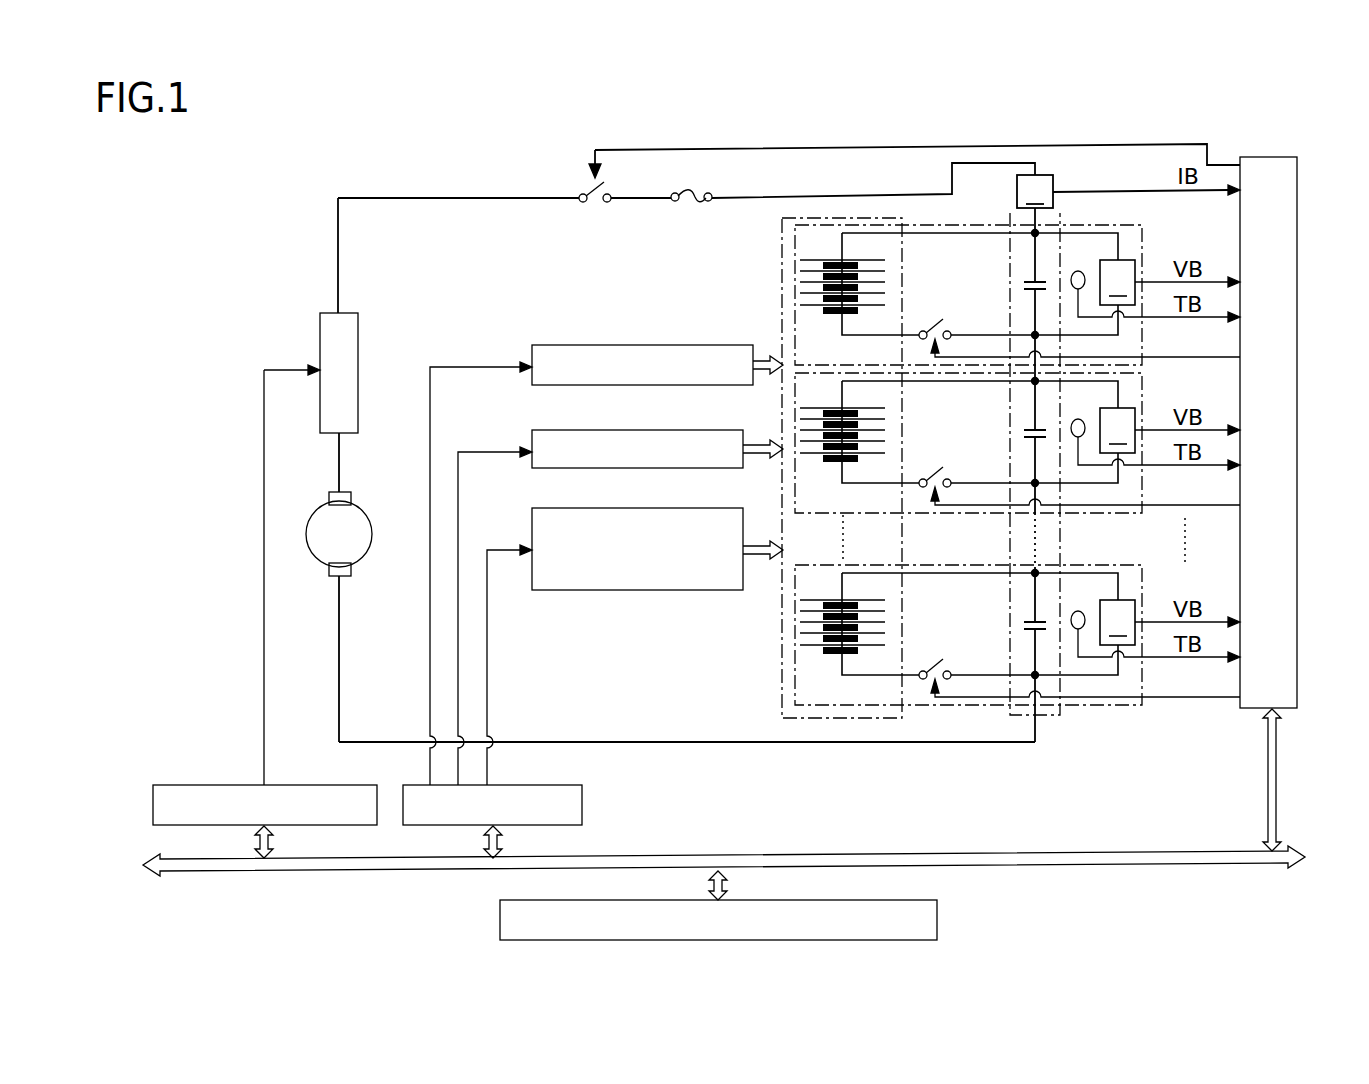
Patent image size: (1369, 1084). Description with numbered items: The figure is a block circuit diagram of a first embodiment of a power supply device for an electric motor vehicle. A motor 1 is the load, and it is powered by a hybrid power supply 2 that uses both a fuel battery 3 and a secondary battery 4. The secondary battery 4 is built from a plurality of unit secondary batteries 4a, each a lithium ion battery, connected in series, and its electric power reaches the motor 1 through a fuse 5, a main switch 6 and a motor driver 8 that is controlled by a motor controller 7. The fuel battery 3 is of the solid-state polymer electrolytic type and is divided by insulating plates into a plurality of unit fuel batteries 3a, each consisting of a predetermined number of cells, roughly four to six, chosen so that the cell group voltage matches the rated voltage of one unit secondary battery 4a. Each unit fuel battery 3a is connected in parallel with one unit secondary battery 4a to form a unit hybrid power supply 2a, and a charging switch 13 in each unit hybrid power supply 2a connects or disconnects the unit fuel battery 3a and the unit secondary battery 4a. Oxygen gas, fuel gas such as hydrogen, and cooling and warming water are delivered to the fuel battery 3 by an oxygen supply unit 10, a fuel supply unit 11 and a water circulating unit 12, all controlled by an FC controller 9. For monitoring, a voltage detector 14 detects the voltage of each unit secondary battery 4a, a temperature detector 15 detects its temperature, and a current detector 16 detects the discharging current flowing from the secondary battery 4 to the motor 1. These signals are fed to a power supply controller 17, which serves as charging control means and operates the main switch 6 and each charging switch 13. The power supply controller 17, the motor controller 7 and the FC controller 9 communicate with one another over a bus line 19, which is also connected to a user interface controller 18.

The motor 1 is at (362, 557).
The hybrid power supply 2 is at (745, 626).
The unit hybrid power supply 2a is at (942, 222).
The fuel battery 3 is at (778, 282).
The unit fuel battery 3a is at (893, 287).
The secondary battery 4 is at (1053, 716).
The unit secondary battery 4a is at (1022, 286).
The fuse 5 is at (695, 203).
The main switch 6 is at (585, 190).
The motor controller 7 is at (192, 785).
The motor driver 8 is at (359, 313).
The FC controller 9 is at (582, 808).
The oxygen supply unit 10 is at (532, 352).
The fuel supply unit 11 is at (532, 440).
The water circulating unit 12 is at (532, 523).
The charging switch 13 is at (940, 320).
The voltage detector 14 is at (1170, 452).
The temperature detector 15 is at (1083, 272).
The current detector 16 is at (1128, 191).
The power supply controller 17 is at (1253, 710).
The user interface controller 18 is at (937, 910).
The bus line 19 is at (762, 857).